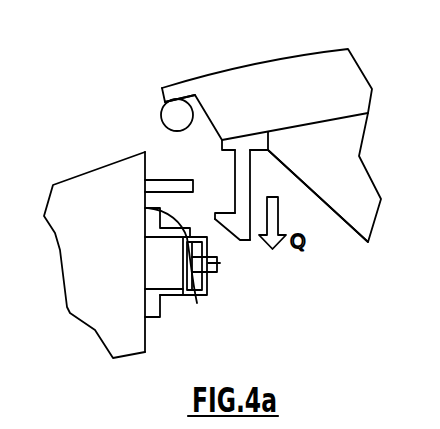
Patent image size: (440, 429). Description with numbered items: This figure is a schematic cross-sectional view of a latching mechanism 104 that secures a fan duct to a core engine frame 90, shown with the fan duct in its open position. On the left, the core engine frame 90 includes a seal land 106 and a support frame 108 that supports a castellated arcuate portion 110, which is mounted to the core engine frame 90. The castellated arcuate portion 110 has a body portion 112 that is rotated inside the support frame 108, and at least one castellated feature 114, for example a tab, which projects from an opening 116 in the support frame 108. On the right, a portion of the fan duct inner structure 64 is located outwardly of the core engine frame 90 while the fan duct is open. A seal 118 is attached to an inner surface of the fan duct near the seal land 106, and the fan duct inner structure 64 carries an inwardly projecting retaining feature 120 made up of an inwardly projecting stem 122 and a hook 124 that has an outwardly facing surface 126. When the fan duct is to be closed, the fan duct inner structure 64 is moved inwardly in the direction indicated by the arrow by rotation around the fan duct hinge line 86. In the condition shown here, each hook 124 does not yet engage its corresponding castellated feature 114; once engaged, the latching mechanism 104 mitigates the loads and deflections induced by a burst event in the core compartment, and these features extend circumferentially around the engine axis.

The fan duct inner structure 64 is at (333, 70).
The fan duct hinge line 86 is at (200, 88).
The seal 118 is at (172, 113).
The inwardly projecting stem 122 is at (238, 176).
The outwardly facing surface 126 is at (215, 210).
The hook 124 is at (241, 234).
The core engine frame 90 is at (105, 180).
The seal land 106 is at (167, 183).
The support frame 108 is at (182, 293).
The body portion 112 is at (153, 202).
The opening 116 is at (206, 262).
The castellated arcuate portion 110 is at (197, 303).
The castellated feature 114 is at (220, 263).
The latching mechanism 104 is at (236, 282).
The inwardly projecting retaining feature 120 is at (320, 282).